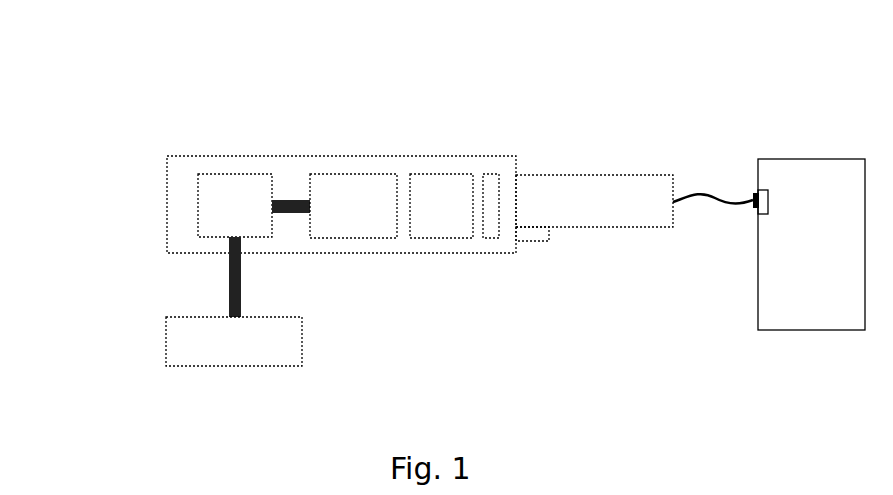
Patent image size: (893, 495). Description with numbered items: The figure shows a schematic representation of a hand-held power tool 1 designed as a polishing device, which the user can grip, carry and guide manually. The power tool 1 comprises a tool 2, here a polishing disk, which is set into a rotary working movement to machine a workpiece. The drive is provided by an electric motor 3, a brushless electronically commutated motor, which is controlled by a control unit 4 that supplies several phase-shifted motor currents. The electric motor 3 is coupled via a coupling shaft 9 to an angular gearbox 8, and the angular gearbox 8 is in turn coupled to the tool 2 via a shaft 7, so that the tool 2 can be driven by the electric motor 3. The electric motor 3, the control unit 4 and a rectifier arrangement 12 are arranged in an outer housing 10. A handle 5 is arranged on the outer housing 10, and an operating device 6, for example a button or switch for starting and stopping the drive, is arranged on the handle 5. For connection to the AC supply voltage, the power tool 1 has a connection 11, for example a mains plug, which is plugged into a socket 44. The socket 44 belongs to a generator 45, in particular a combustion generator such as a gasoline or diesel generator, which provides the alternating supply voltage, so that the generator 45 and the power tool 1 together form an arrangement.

The power tool 1 is at (187, 91).
The tool 2 is at (178, 347).
The electric motor 3 is at (358, 186).
The control unit 4 is at (457, 192).
The handle 5 is at (587, 188).
The operating device 6 is at (540, 238).
The shaft 7 is at (241, 292).
The angular gearbox 8 is at (232, 197).
The coupling shaft 9 is at (290, 200).
The outer housing 10 is at (412, 156).
The connection 11 is at (750, 191).
The rectifier arrangement 12 is at (490, 185).
The socket 44 is at (764, 202).
The generator 45 is at (836, 144).